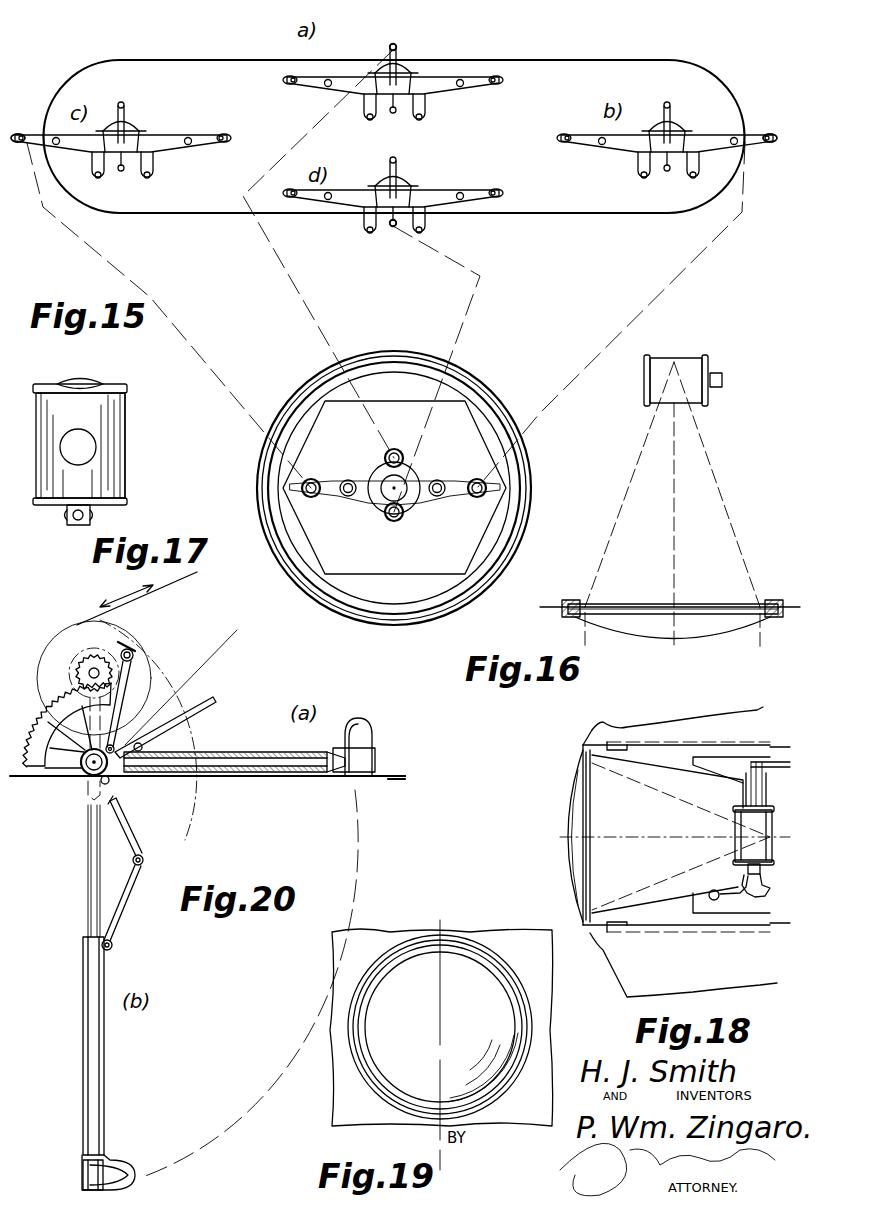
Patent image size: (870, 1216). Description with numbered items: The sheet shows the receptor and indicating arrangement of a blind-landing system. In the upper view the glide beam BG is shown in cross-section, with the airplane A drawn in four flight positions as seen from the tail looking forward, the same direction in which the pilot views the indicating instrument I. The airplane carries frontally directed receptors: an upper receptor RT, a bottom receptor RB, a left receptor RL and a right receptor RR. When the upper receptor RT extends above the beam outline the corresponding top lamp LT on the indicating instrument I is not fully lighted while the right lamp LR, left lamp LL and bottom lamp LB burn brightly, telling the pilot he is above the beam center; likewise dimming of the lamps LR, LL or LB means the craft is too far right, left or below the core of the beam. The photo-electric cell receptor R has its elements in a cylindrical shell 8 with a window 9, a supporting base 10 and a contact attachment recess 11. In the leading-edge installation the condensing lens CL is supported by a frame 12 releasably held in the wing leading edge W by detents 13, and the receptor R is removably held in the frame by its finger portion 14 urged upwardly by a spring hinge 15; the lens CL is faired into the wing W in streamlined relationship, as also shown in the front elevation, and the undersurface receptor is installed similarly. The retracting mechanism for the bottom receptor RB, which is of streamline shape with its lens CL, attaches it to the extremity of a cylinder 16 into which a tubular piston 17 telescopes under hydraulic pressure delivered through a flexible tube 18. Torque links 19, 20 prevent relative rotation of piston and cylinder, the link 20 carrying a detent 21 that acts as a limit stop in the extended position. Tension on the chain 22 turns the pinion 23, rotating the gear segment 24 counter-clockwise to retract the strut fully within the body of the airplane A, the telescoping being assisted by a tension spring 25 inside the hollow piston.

In FIG. 15, the glide beam BG is at (394, 117).
In FIG. 15, the airplane A is at (394, 138).
In FIG. 20, the airplane A is at (397, 762).
In FIG. 15, the upper receptor RT is at (416, 34).
In FIG. 15, the bottom receptor RB is at (377, 249).
In FIG. 20, the bottom receptor RB is at (228, 941).
In FIG. 15, the left receptor RL is at (20, 122).
In FIG. 15, the right receptor RR is at (767, 120).
In FIG. 15, the indicating instrument I is at (394, 480).
In FIG. 15, the top lamp LT is at (398, 444).
In FIG. 15, the bottom lamp LB is at (385, 528).
In FIG. 15, the left lamp LL is at (316, 474).
In FIG. 15, the right lamp LR is at (469, 473).
In FIG. 16, the receptor R is at (676, 366).
In FIG. 17, the receptor R is at (97, 438).
In FIG. 18, the receptor R is at (743, 811).
In FIG. 16, the supporting base 10 is at (734, 365).
In FIG. 17, the supporting base 10 is at (55, 527).
In FIG. 18, the supporting base 10 is at (772, 872).
In FIG. 16, the wing leading edge W is at (652, 596).
In FIG. 18, the wing leading edge W is at (683, 852).
In FIG. 19, the wing leading edge W is at (441, 1027).
In FIG. 16, the condensing lens CL is at (673, 600).
In FIG. 18, the condensing lens CL is at (553, 835).
In FIG. 19, the condensing lens CL is at (441, 1027).
In FIG. 20, the condensing lens CL is at (65, 1161).
In FIG. 16, the frame 12 is at (668, 589).
In FIG. 18, the frame 12 is at (675, 834).
In FIG. 19, the frame 12 is at (441, 1027).
In FIG. 17, the window 9 is at (78, 447).
In FIG. 17, the contact attachment recess 11 is at (80, 366).
In FIG. 17, the cylindrical shell 8 is at (137, 445).
In FIG. 18, the detents 13 is at (686, 826).
In FIG. 18, the finger portion 14 is at (746, 893).
In FIG. 18, the spring hinge 15 is at (715, 885).
In FIG. 20, the chain 22 is at (137, 598).
In FIG. 20, the pinion 23 is at (67, 659).
In FIG. 20, the gear segment 24 is at (96, 725).
In FIG. 20, the detent 21 is at (143, 743).
In FIG. 20, the flexible tube 18 is at (168, 713).
In FIG. 20, the cylinder 16 is at (214, 937).
In FIG. 20, the tension spring 25 is at (176, 755).
In FIG. 20, the tubular piston 17 is at (63, 871).
In FIG. 20, the torque link 20 is at (137, 902).
In FIG. 20, the torque link 19 is at (140, 800).